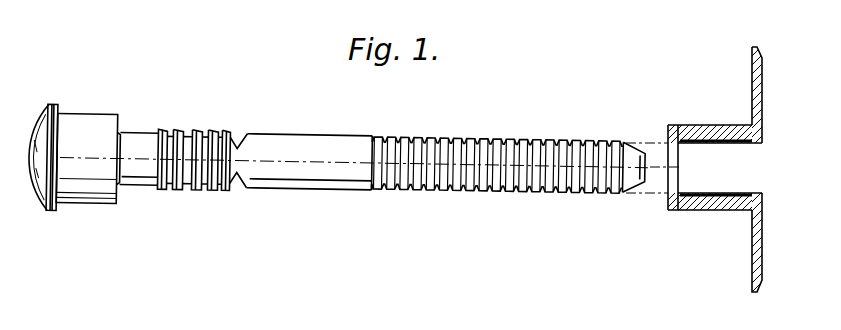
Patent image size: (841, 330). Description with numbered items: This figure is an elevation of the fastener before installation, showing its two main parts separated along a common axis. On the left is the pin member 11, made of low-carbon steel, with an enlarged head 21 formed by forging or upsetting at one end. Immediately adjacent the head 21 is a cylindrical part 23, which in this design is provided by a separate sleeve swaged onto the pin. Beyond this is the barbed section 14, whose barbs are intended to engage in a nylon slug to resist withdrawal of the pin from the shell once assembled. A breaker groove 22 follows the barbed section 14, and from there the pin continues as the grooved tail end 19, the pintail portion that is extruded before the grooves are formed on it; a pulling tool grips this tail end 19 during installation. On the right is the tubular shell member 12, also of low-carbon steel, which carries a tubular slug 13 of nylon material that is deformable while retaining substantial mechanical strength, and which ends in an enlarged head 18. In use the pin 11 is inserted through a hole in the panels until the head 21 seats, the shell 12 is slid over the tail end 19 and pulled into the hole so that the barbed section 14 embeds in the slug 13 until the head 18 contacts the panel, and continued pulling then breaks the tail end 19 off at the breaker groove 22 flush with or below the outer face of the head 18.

The pin member 11 is at (236, 196).
The tubular shell member 12 is at (724, 220).
The tubular slug 13 is at (691, 140).
The barbed section 14 is at (224, 196).
The enlarged head of the shell 18 is at (752, 91).
The tail end of the pin 19 is at (514, 191).
The enlarged head of the pin 21 is at (37, 116).
The breaker groove 22 is at (240, 136).
The cylindrical part 23 is at (104, 203).